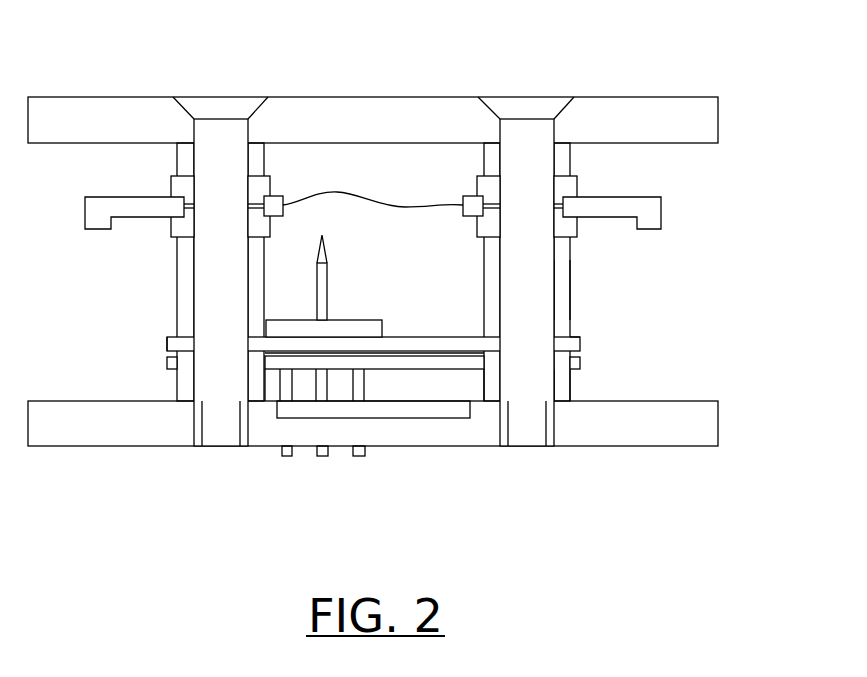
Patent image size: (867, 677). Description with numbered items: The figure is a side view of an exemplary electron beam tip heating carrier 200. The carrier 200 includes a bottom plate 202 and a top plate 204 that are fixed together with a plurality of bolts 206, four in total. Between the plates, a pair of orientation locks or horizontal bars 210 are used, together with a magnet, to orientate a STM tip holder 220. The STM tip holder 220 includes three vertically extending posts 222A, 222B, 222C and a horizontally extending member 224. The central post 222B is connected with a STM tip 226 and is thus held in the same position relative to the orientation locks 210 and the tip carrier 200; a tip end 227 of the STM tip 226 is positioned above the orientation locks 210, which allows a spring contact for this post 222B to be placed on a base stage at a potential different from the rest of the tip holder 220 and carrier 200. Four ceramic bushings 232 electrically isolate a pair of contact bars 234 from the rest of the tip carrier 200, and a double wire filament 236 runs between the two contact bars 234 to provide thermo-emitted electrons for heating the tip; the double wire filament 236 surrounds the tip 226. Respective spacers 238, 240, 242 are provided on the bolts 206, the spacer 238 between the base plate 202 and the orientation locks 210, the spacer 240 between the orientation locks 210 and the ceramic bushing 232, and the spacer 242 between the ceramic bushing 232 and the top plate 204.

The electron beam tip heating carrier 200 is at (390, 61).
The bottom plate 202 is at (620, 433).
The top plate 204 is at (720, 120).
The bolts 206 is at (227, 97).
The orientation locks 210 is at (166, 343).
The STM tip holder 220 is at (442, 300).
The vertically extending post 222A is at (280, 457).
The central post 222B is at (322, 457).
The vertically extending post 222C is at (363, 457).
The horizontally extending member 224 is at (352, 323).
The STM tip 226 is at (330, 272).
The tip end 227 is at (326, 241).
The ceramic bushings 232 is at (170, 182).
The contact bars 234 is at (84, 213).
The double wire filament 236 is at (400, 203).
The spacer 238 is at (572, 392).
The spacer 240 is at (572, 290).
The spacer 242 is at (572, 157).